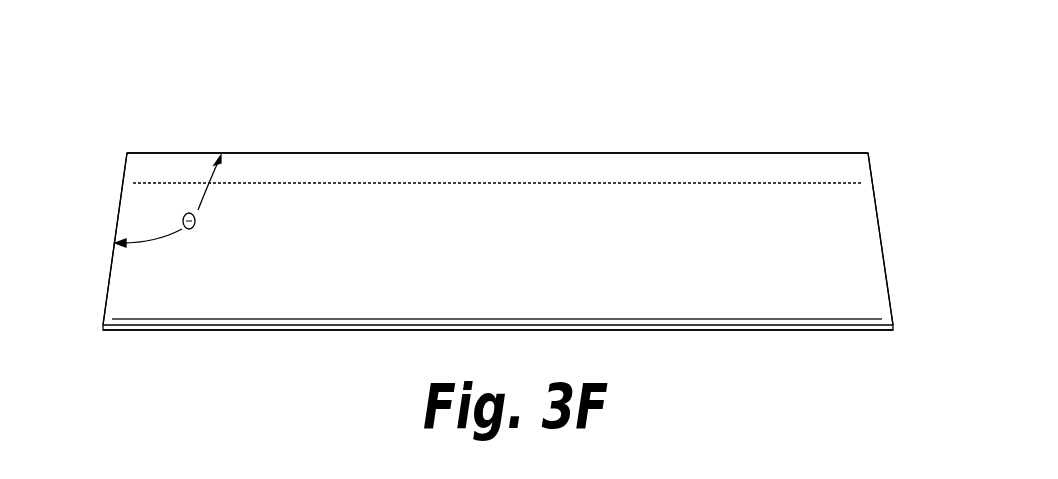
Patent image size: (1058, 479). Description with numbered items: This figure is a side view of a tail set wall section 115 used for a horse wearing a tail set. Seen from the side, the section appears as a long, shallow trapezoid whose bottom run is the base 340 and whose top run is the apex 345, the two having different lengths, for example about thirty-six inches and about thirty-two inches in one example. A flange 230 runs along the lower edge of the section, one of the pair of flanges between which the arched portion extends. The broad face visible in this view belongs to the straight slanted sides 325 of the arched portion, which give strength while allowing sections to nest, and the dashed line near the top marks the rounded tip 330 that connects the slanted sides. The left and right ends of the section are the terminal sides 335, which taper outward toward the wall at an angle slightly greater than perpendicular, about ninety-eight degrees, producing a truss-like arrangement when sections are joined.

The tail set wall section 115 is at (190, 86).
The flange 230 is at (783, 333).
The straight slanted sides 325 is at (517, 260).
The rounded tip 330 is at (558, 169).
The terminal sides 335 is at (119, 200).
The base 340 is at (271, 334).
The apex 345 is at (343, 152).